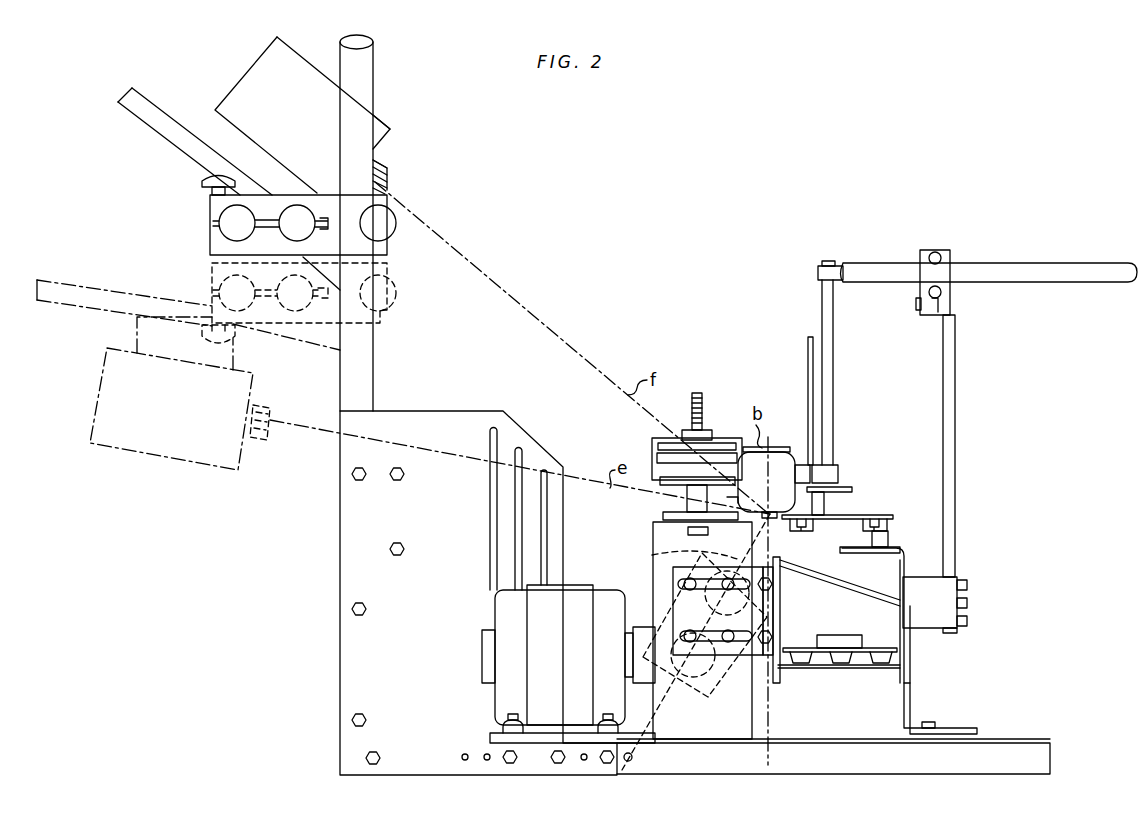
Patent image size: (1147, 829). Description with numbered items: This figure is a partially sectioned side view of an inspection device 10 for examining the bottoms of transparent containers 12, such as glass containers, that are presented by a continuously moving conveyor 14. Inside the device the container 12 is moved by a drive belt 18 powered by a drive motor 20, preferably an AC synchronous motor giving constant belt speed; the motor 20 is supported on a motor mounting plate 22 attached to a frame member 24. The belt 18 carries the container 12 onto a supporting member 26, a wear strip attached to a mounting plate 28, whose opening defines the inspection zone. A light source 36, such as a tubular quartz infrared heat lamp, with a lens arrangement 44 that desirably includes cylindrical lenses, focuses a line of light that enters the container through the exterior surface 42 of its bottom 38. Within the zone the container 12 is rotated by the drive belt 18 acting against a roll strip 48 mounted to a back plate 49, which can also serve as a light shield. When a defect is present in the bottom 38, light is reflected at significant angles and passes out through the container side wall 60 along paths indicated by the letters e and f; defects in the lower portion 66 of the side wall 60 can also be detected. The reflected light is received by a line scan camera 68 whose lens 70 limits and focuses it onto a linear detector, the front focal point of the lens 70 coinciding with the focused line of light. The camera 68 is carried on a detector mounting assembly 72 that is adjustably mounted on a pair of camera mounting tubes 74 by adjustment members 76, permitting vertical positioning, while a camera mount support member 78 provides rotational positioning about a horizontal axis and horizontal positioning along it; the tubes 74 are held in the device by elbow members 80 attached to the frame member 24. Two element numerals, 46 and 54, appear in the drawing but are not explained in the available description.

The inspection device 10 is at (703, 170).
The transparent container 12 is at (793, 465).
The conveyor 14 is at (878, 513).
The drive belt 18 is at (728, 463).
The drive motor 20 is at (482, 655).
The motor mounting plate 22 is at (540, 743).
The frame member 24 is at (631, 765).
The supporting member 26 is at (770, 520).
The mounting plate 28 is at (653, 528).
The light source 36 is at (727, 682).
The bottom 38 is at (785, 525).
The exterior surface 42 is at (767, 517).
The lens arrangement 44 is at (658, 556).
The coupling 46 is at (636, 683).
The roll strip 48 is at (808, 440).
The back plate 49 is at (808, 355).
The nozzle 54 is at (777, 514).
The side wall 60 is at (738, 502).
The lower portion 66 is at (800, 498).
The line scan camera 68 is at (380, 118).
The lens 70 is at (388, 176).
The detector mounting assembly 72 is at (223, 135).
The camera mounting tubes 74 is at (375, 72).
The adjustment members 76 is at (210, 209).
The camera mount support member 78 is at (223, 237).
The elbow members 80 is at (340, 672).